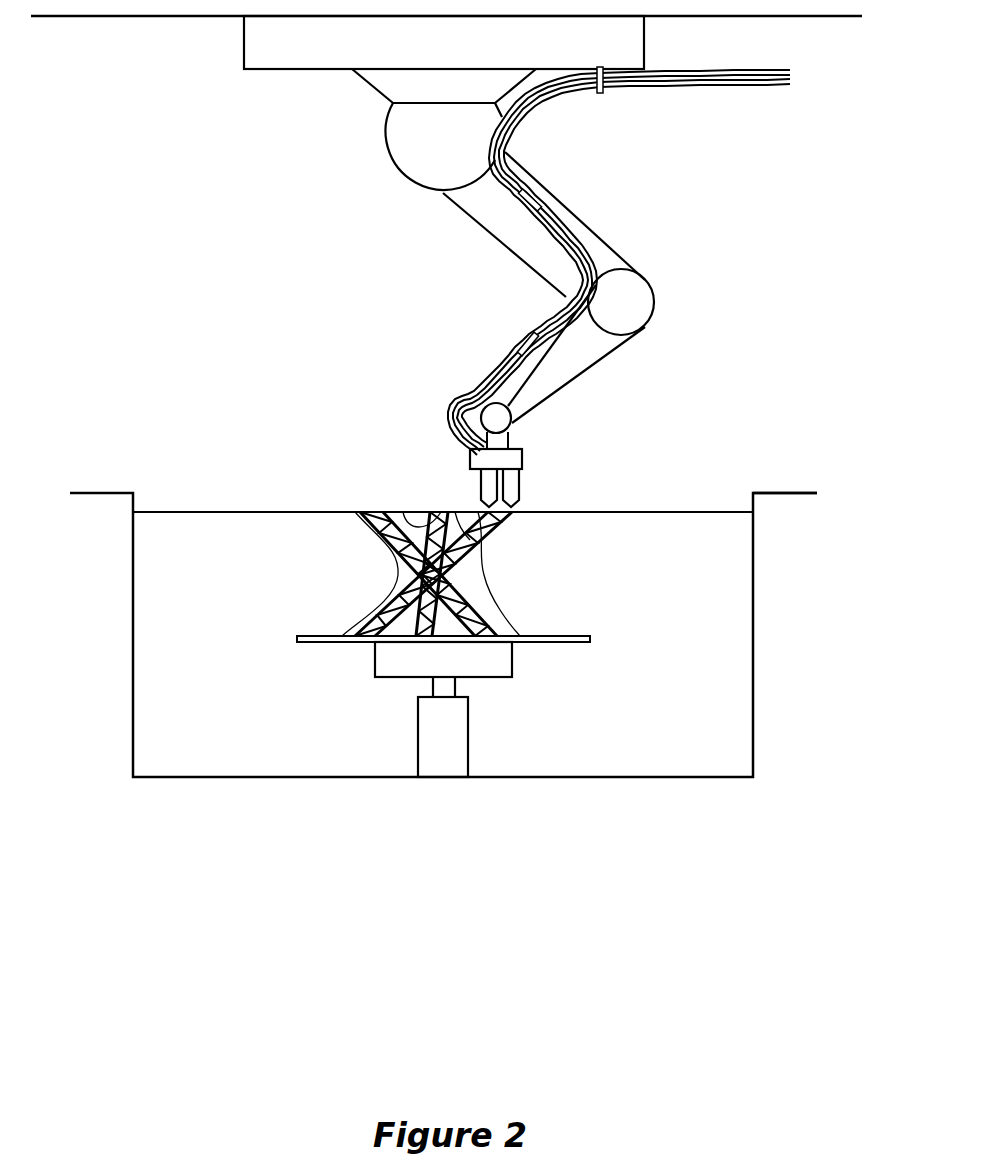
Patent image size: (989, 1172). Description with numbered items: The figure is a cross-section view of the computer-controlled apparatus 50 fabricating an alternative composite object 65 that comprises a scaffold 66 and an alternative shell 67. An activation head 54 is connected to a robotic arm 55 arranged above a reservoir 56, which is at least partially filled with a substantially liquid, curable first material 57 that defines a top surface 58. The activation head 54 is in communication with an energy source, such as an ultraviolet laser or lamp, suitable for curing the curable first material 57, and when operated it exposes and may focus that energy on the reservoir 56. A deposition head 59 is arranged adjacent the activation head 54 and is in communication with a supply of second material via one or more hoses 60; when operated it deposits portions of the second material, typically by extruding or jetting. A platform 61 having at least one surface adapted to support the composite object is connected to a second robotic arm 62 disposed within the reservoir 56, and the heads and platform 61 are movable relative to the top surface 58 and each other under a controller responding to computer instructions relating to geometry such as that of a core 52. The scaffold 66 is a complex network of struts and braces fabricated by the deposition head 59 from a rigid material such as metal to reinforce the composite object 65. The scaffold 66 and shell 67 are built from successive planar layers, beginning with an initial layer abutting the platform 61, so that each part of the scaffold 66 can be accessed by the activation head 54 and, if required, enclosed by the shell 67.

The computer-controlled apparatus 50 is at (386, 292).
The core 52 is at (603, 511).
The activation head 54 is at (479, 483).
The robotic arm 55 is at (516, 232).
The reservoir 56 is at (753, 633).
The curable first material 57 is at (236, 718).
The top surface 58 is at (722, 511).
The deposition head 59 is at (522, 485).
The hoses 60 is at (468, 386).
The platform 61 is at (568, 645).
The second robotic arm 62 is at (468, 733).
The alternative composite object 65 is at (414, 574).
The scaffold 66 is at (484, 579).
The alternative shell 67 is at (507, 626).